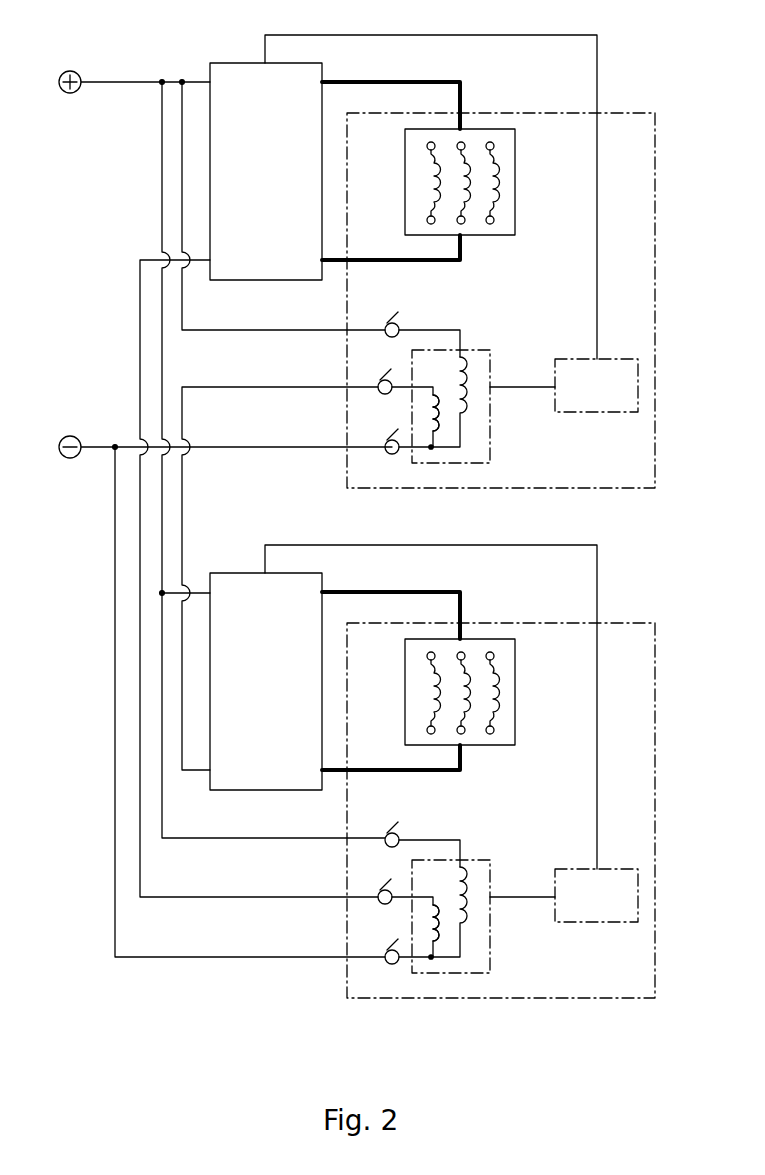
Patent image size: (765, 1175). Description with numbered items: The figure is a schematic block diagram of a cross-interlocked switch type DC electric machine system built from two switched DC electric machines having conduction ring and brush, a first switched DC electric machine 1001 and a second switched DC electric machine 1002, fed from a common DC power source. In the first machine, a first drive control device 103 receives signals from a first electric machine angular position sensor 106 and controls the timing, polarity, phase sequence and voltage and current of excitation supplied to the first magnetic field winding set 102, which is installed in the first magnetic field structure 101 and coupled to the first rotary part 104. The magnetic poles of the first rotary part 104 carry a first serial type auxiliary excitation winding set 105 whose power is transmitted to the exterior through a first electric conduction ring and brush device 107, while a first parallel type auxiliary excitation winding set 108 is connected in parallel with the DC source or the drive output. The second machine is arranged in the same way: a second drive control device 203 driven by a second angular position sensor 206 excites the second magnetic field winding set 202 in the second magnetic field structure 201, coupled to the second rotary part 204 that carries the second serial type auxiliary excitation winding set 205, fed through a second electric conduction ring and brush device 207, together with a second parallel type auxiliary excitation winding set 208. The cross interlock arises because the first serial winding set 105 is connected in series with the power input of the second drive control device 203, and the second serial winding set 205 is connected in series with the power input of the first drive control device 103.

The first drive control device 103 is at (240, 63).
The first magnetic field structure of electric machine 101 is at (471, 182).
The first magnetic field winding set of electric machine 102 is at (433, 182).
The first switched DC electric machine having conduction ring and brush 1001 is at (657, 175).
The first electric conduction ring and brush device 107 is at (400, 322).
The first rotary part of electric machine 104 is at (467, 416).
The first serial type auxiliary excitation winding set 105 is at (438, 413).
The first parallel type auxiliary excitation winding set 108 is at (470, 402).
The first electric machine angular position sensor 106 is at (613, 413).
The second drive control device 203 is at (225, 573).
The second magnetic field structure of electric machine 201 is at (471, 692).
The second magnetic field winding set of electric machine 202 is at (433, 692).
The second switched DC electric machine having conduction ring and brush 1002 is at (657, 685).
The second electric conduction ring and brush device 207 is at (400, 832).
The second rotary part of electric machine 204 is at (467, 926).
The second serial type auxiliary excitation winding set 205 is at (438, 923).
The second parallel type auxiliary excitation winding set 208 is at (470, 912).
The second electric machine angular position sensor 206 is at (613, 923).